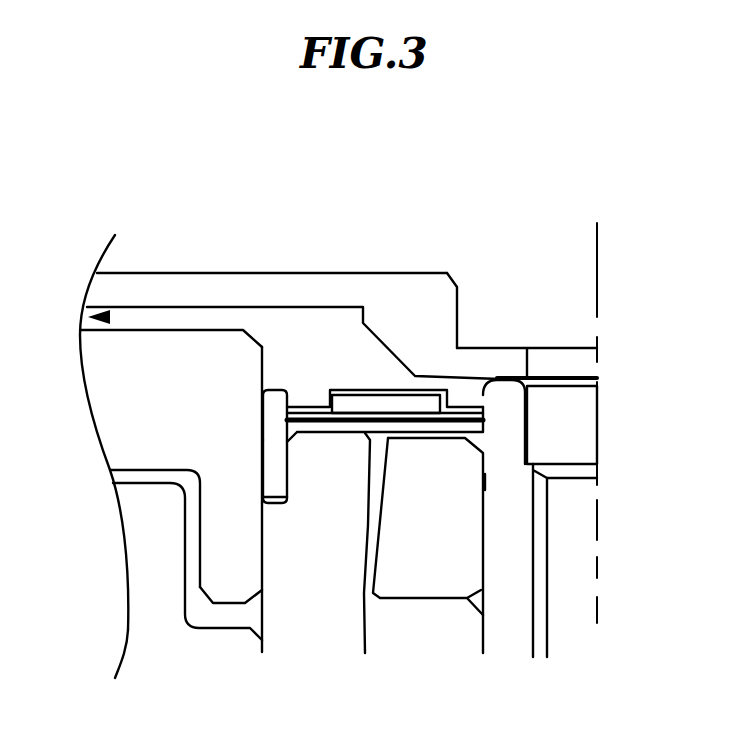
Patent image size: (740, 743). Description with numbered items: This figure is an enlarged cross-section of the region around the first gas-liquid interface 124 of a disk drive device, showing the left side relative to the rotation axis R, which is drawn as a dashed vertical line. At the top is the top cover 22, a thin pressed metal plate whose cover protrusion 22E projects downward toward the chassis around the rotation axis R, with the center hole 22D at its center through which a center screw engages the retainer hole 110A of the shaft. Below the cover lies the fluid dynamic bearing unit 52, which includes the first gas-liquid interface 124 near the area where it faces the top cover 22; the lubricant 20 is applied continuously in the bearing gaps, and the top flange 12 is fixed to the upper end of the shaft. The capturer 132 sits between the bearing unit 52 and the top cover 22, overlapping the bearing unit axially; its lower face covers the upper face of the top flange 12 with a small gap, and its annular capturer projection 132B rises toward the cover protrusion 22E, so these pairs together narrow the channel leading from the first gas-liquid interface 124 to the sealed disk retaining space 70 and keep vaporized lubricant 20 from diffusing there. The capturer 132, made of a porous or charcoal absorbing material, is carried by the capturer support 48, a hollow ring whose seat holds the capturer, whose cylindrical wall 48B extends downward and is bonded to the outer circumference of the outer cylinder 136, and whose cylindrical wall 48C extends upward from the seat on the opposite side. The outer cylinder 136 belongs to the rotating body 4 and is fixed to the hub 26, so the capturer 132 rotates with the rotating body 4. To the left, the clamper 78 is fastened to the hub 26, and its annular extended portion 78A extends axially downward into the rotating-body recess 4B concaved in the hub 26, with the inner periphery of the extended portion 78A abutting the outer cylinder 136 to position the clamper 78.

The rotating body 4 is at (125, 428).
The clamper 78 is at (155, 528).
The extended portion 78A is at (227, 583).
The rotating-body recess 4B is at (227, 620).
The hub 26 is at (137, 647).
The disk retaining space 70 is at (106, 317).
The top cover 22 is at (258, 293).
The cover protrusion 22E is at (427, 370).
The center hole 22D is at (530, 362).
The rotation axis R is at (596, 407).
The capturer support 48 is at (277, 485).
The cylindrical wall 48B is at (283, 423).
The cylindrical wall 48C is at (278, 407).
The capturer 132 is at (360, 405).
The capturer projection 132B is at (410, 392).
The outer cylinder 136 is at (283, 543).
The top flange 12 is at (430, 545).
The lubricant 20 is at (373, 507).
The first gas-liquid interface 124 is at (382, 488).
The retainer hole 110A is at (517, 438).
The fluid dynamic bearing unit 52 is at (437, 645).